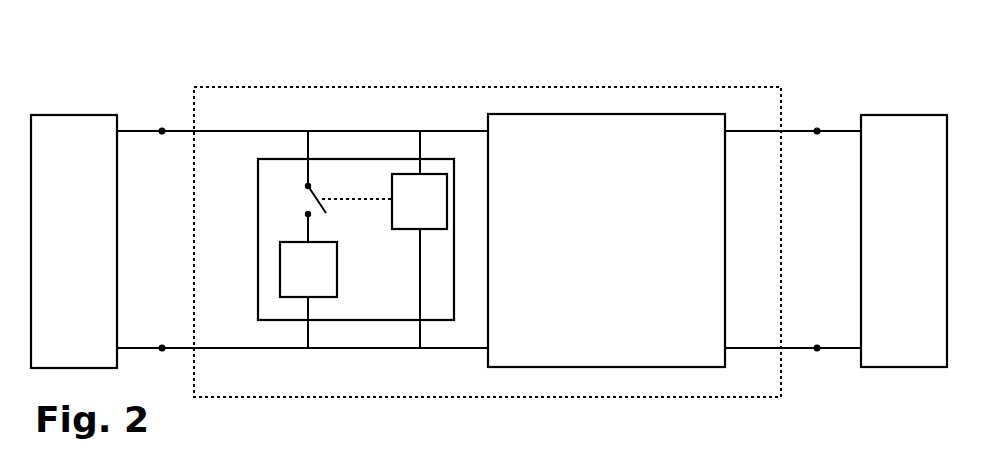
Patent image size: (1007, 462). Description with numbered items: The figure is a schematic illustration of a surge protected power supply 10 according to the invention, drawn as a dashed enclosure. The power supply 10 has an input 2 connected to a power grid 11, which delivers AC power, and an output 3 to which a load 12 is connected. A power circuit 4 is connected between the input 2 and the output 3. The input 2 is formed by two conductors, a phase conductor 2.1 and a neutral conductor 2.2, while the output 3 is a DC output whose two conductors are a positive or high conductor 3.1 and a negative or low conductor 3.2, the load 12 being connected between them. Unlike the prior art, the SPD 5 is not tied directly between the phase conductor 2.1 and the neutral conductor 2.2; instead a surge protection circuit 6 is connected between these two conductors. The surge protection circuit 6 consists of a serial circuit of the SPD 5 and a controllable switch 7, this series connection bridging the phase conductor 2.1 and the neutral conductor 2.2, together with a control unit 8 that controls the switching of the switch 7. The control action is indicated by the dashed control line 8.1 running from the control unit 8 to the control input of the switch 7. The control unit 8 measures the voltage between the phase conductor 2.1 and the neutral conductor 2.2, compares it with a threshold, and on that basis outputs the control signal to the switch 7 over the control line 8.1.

The input 2 is at (161, 104).
The phase conductor 2.1 is at (239, 132).
The neutral conductor 2.2 is at (237, 347).
The output 3 is at (807, 104).
The positive or high conductor 3.1 is at (768, 134).
The negative or low conductor 3.2 is at (775, 347).
The power circuit 4 is at (606, 240).
The SPD 5 is at (308, 269).
The surge protection circuit 6 is at (353, 158).
The switch 7 is at (315, 198).
The control unit 8 is at (419, 201).
The control line 8.1 is at (350, 202).
The power supply 10 is at (258, 85).
The power grid 11 is at (74, 241).
The load 12 is at (904, 241).